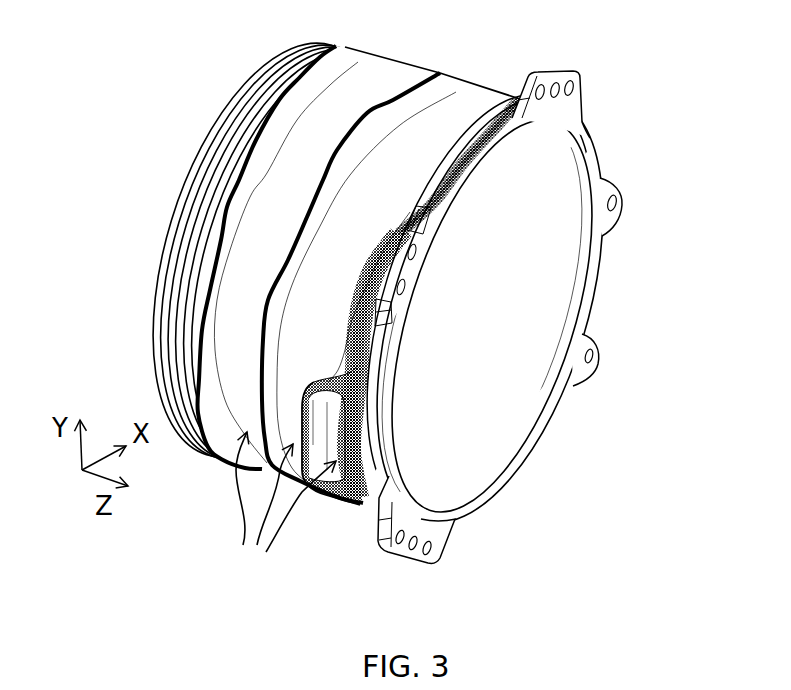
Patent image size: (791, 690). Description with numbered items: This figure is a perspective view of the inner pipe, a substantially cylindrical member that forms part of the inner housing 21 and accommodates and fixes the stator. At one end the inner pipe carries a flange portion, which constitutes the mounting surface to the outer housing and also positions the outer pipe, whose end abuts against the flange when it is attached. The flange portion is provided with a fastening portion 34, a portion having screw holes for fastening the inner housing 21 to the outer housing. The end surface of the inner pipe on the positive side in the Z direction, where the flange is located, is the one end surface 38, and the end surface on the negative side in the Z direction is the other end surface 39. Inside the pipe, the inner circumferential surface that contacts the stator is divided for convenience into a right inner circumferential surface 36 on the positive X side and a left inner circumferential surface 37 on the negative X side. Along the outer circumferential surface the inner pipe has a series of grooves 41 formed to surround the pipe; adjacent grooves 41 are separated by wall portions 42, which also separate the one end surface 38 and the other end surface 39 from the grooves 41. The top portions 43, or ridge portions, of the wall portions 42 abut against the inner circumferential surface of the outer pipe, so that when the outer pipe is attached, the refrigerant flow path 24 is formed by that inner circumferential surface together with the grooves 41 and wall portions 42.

The inner housing 21 is at (381, 294).
The refrigerant flow path 24 is at (284, 506).
The fastening portion 34 is at (570, 75).
The right inner circumferential surface 36 is at (552, 213).
The left inner circumferential surface 37 is at (388, 363).
The one end surface 38 is at (437, 522).
The other end surface 39 is at (175, 264).
The grooves 41 is at (386, 80).
The wall portions 42 is at (349, 60).
The top portions 43 is at (280, 65).